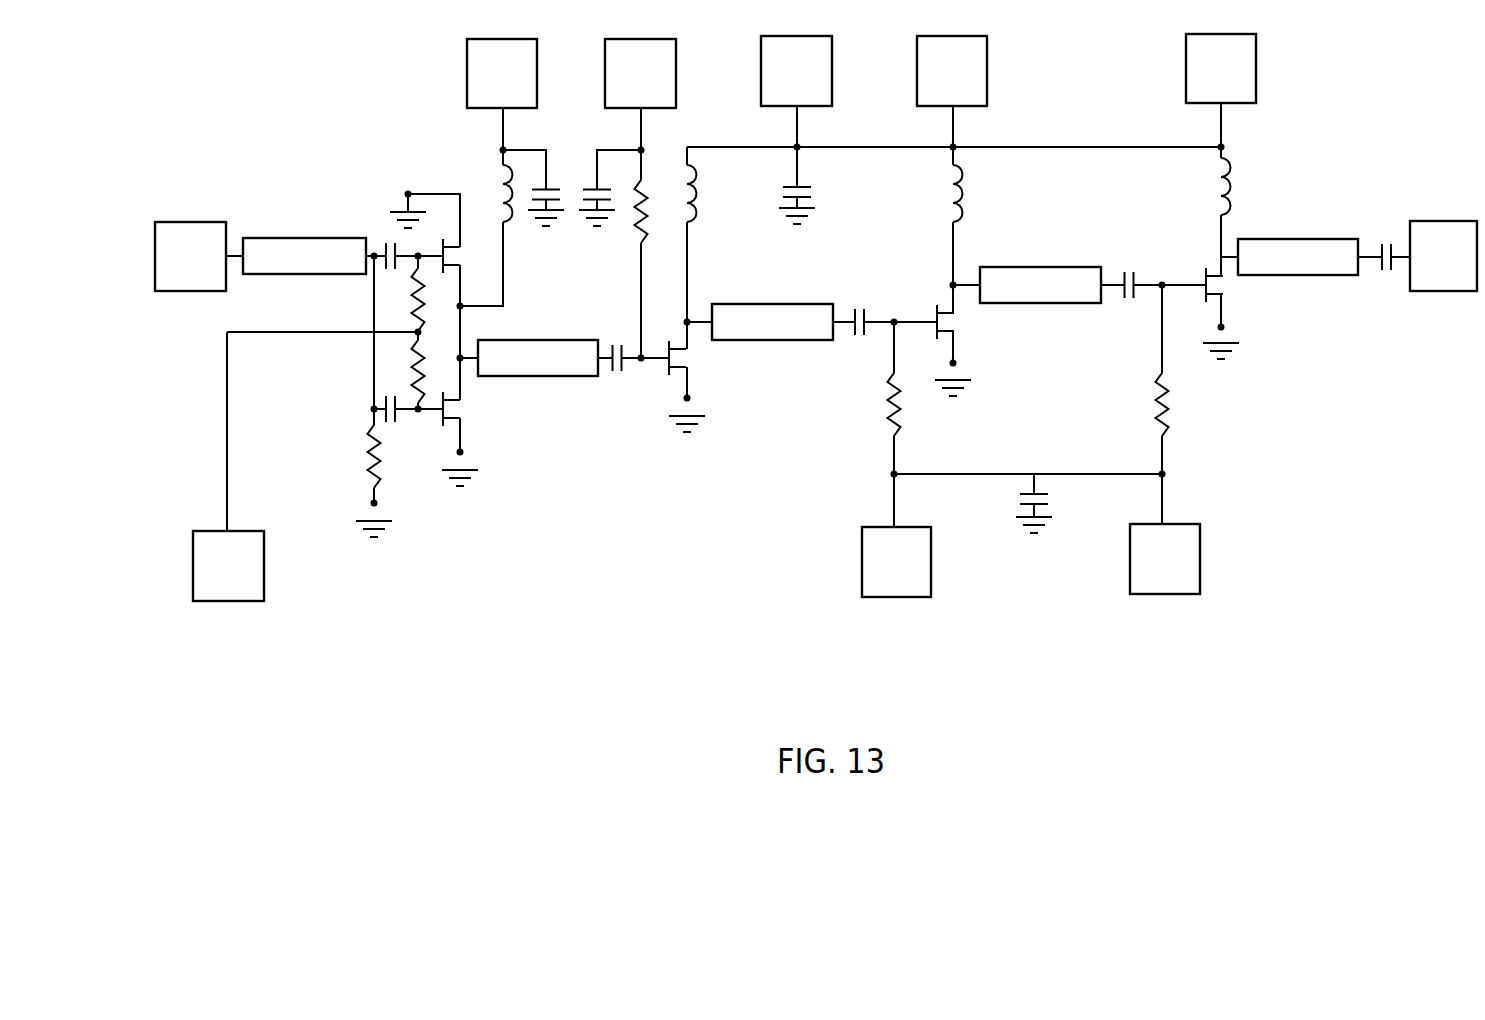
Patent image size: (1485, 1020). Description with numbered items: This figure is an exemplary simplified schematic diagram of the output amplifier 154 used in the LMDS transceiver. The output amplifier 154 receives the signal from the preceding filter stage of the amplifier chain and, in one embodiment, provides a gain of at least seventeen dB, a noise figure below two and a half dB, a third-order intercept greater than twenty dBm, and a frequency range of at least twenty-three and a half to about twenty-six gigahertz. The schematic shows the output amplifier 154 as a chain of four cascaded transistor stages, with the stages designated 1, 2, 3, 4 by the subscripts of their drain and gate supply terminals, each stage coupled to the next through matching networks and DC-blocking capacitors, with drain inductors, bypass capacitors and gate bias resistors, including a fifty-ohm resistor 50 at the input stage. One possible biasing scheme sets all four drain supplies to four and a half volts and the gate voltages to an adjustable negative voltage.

The output amplifier 154 is at (816, 373).
The 50 ohm resistor 50 is at (352, 473).
The first amplifier stage (VD1/VG1) 1 is at (359, 320).
The second amplifier stage (VD2/VG2) 2 is at (645, 234).
The third amplifier stage (VD3/VG3) 3 is at (849, 316).
The fourth amplifier stage (VD4/VG4) 4 is at (1228, 314).